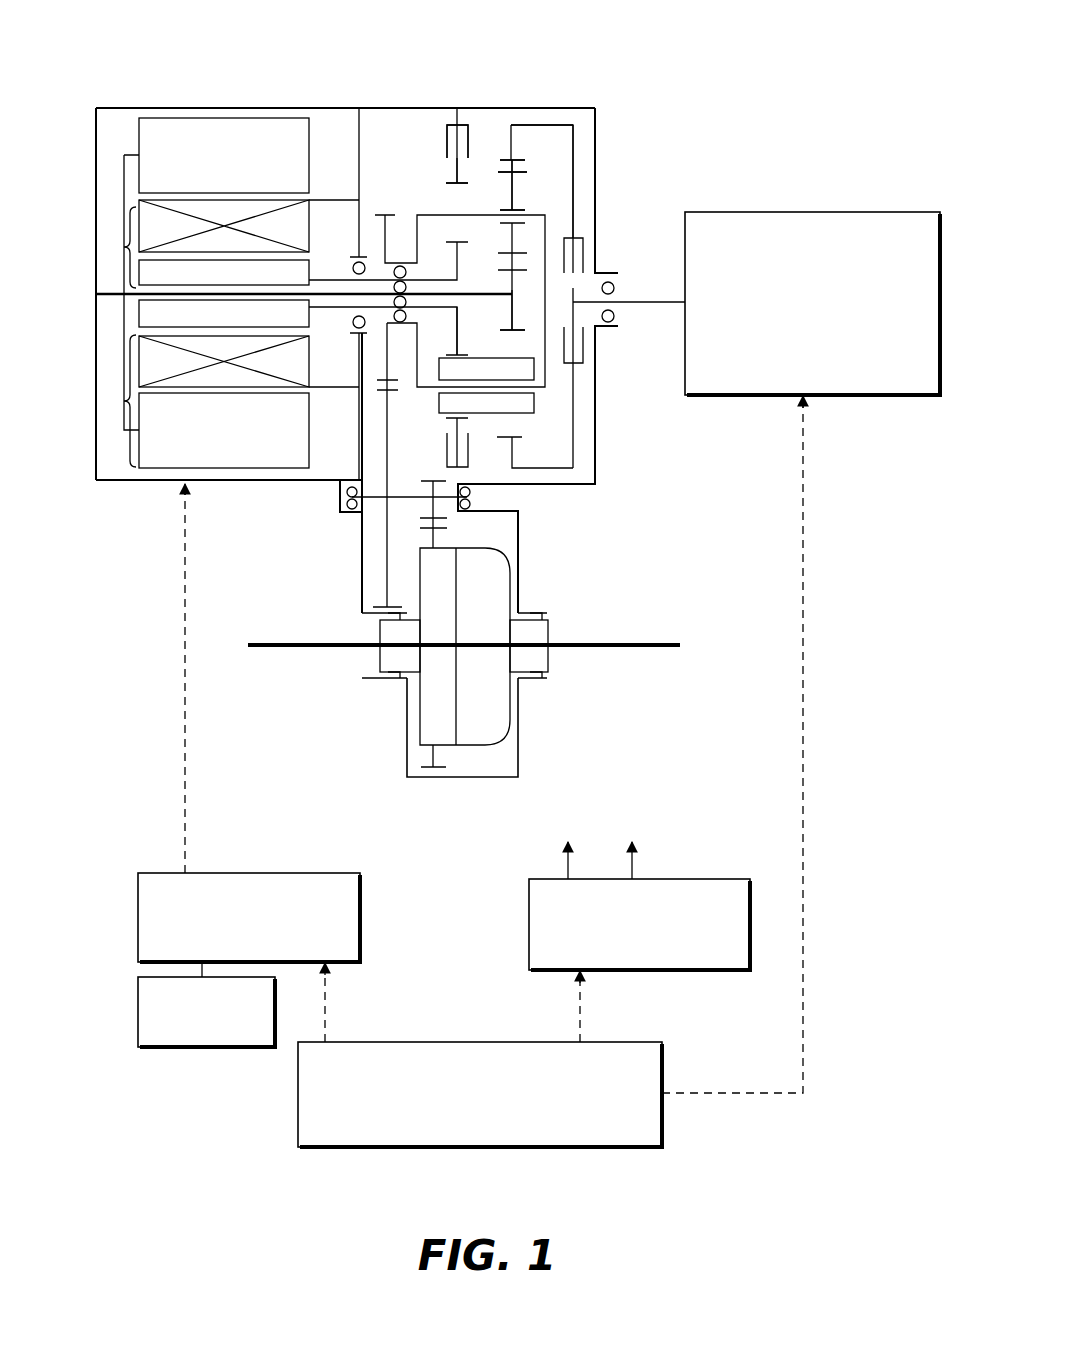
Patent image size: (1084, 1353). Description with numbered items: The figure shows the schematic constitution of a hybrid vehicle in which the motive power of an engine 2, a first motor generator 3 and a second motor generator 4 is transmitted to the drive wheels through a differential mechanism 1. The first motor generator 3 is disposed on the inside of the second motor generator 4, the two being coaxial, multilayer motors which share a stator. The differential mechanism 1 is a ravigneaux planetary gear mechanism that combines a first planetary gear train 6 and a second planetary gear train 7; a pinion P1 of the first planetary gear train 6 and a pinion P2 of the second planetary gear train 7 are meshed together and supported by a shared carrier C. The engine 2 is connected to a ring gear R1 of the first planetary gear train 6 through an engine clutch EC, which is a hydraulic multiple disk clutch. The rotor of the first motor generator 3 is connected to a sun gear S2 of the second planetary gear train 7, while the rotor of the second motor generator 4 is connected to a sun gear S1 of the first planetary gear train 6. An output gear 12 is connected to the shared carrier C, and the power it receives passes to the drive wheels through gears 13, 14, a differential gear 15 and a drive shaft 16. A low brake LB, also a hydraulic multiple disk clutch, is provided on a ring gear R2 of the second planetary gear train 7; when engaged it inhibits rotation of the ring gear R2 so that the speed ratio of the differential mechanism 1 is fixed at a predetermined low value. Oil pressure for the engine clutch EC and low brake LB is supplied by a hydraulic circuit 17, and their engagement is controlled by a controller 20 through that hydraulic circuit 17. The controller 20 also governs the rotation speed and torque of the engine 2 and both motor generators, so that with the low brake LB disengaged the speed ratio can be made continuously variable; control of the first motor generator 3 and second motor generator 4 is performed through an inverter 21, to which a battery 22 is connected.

The differential mechanism 1 is at (486, 118).
The engine 2 is at (872, 397).
The first motor generator 3 is at (124, 247).
The second motor generator 4 is at (124, 401).
The first planetary gear train 6 is at (566, 135).
The second planetary gear train 7 is at (417, 136).
The output gear 12 is at (385, 213).
The gear 13 is at (387, 567).
The gear 14 is at (432, 482).
The differential gear 15 is at (478, 737).
The drive shaft 16 is at (607, 650).
The hydraulic circuit 17 is at (703, 963).
The controller 20 is at (425, 1137).
The inverter 21 is at (296, 878).
The battery 22 is at (203, 1047).
The low brake LB is at (446, 139).
The engine clutch EC is at (584, 244).
The shared carrier C is at (427, 392).
The ring gear R1 is at (518, 158).
The pinion P1 is at (513, 195).
The sun gear S1 is at (513, 307).
The ring gear R2 is at (449, 184).
The pinion P2 is at (440, 413).
The sun gear S2 is at (458, 331).